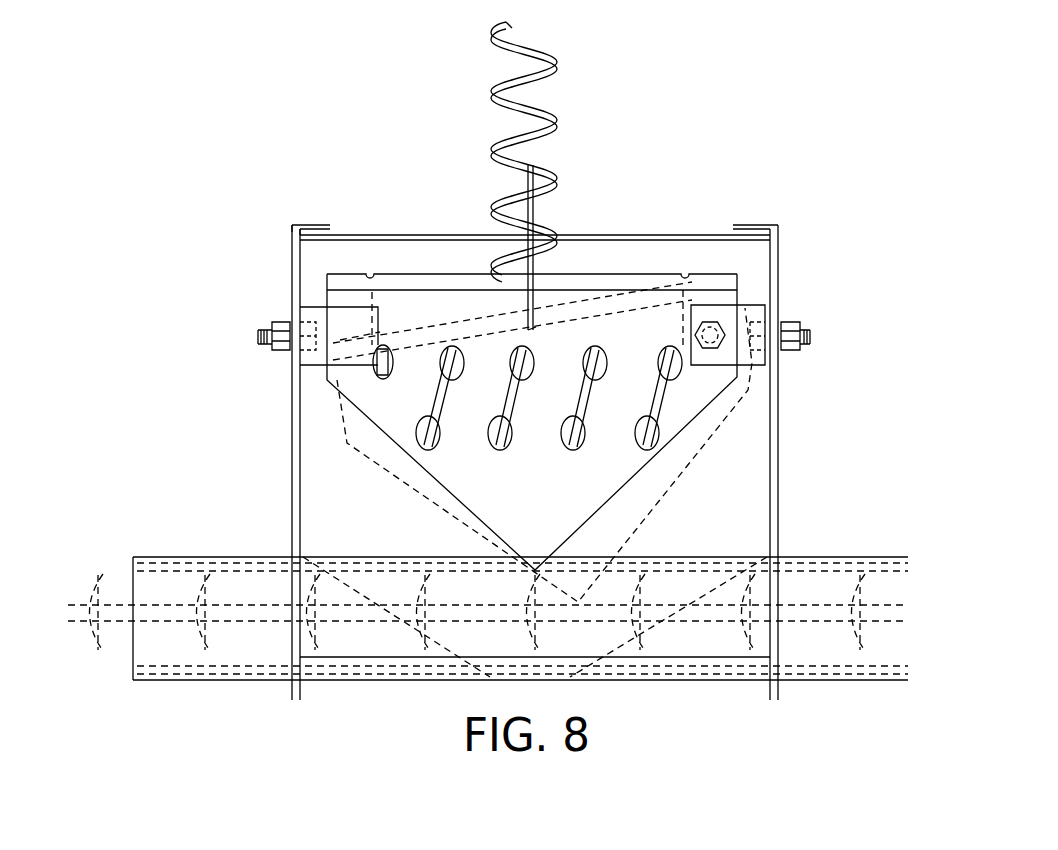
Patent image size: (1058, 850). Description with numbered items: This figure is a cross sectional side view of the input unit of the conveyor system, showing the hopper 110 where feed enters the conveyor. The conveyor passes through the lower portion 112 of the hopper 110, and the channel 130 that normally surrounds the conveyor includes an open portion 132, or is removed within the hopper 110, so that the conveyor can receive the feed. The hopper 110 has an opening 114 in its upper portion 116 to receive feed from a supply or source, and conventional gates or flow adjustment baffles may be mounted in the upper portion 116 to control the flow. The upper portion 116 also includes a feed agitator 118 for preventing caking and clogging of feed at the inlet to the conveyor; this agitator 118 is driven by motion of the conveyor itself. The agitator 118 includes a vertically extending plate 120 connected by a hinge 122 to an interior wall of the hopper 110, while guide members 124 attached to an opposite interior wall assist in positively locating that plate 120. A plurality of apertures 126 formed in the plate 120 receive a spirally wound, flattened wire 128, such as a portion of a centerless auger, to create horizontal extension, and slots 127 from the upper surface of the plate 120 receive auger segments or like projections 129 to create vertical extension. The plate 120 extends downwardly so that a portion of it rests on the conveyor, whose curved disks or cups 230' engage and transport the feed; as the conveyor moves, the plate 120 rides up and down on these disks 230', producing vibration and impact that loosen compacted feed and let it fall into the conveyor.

The hopper 110 is at (782, 424).
The lower portion 112 is at (292, 540).
The opening 114 is at (691, 235).
The upper portion 116 is at (291, 274).
The feed agitator 118 is at (578, 270).
The vertically extending plate 120 is at (553, 525).
The hinge 122 is at (718, 322).
The guide members 124 is at (313, 358).
The apertures 126 is at (440, 448).
The slots 127 is at (382, 300).
The spirally wound, flattened wire 128 is at (443, 400).
The projections 129 is at (538, 212).
The channel 130 is at (828, 557).
The open portion 132 is at (710, 582).
The curved disks or cups 230' is at (478, 649).